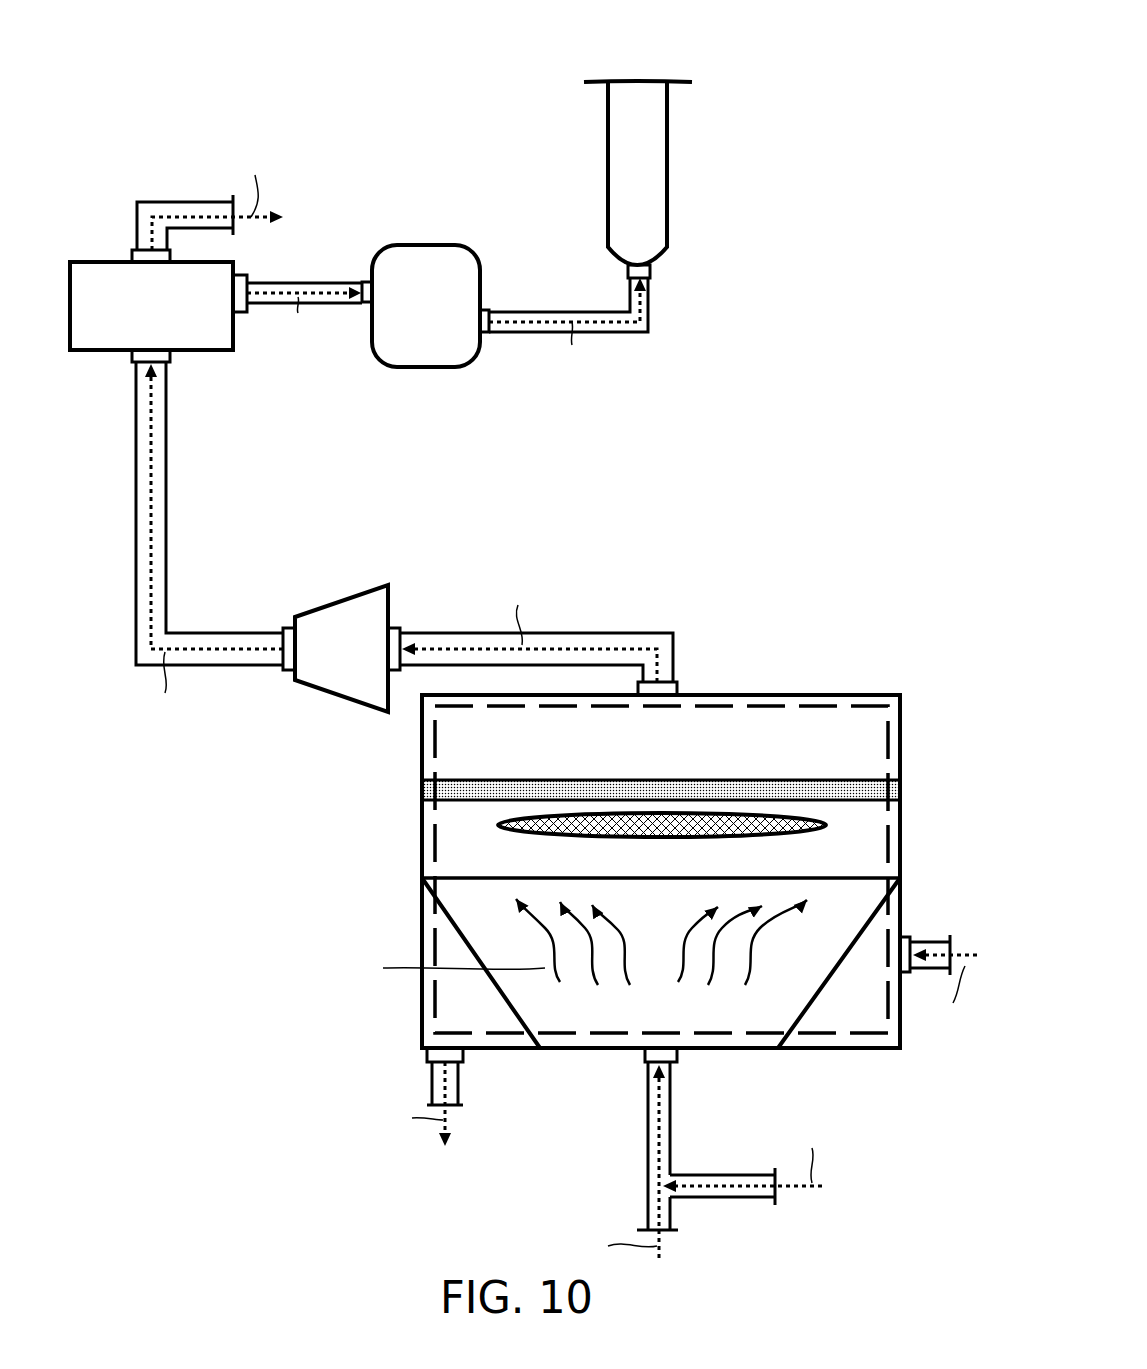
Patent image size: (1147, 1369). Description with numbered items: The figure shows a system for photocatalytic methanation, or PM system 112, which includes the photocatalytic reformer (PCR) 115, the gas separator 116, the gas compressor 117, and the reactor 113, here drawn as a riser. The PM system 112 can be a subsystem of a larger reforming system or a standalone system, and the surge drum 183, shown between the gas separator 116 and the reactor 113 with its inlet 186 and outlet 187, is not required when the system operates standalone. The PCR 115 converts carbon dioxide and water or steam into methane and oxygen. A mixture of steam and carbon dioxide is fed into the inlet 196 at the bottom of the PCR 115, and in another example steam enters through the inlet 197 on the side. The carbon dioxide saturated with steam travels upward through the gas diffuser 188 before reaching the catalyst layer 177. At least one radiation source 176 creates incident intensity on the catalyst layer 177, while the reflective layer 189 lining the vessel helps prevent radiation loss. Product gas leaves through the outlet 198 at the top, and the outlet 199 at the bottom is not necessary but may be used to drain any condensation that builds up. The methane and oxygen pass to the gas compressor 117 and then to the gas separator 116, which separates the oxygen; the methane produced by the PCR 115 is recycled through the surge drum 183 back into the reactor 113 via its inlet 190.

The system for photocatalytic methanation (PM system) 112 is at (906, 166).
The reactor 113 is at (608, 180).
The photocatalytic reformer (PCR) 115 is at (547, 902).
The gas separator 116 is at (137, 332).
The gas compressor 117 is at (340, 598).
The radiation source 176 is at (498, 826).
The catalyst layer 177 is at (422, 790).
The surge drum 183 is at (412, 340).
The inlet of second surge drum 186 is at (364, 282).
The outlet of second surge drum 187 is at (484, 334).
The gas diffuser 188 is at (422, 884).
The reflective layer 189 is at (435, 731).
The inlet 190 is at (653, 272).
The inlet 196 is at (677, 1063).
The inlet 197 is at (912, 933).
The outlet 198 is at (680, 682).
The outlet 199 is at (463, 1063).